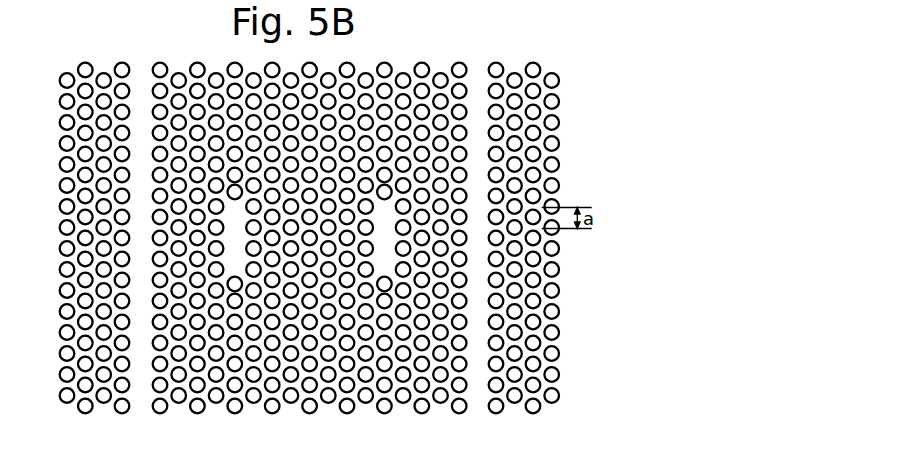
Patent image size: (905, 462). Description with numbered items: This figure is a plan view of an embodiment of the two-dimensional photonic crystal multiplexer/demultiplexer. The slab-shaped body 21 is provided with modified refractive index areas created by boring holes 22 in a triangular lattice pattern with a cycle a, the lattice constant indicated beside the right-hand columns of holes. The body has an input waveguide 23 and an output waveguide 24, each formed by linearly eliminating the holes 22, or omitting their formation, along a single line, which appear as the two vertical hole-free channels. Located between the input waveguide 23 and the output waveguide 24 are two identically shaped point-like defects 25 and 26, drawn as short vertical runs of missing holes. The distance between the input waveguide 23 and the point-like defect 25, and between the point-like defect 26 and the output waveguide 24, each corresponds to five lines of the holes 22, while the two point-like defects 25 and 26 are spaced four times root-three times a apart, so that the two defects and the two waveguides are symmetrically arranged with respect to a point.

The body 21 is at (542, 97).
The hole 22 is at (556, 137).
The input waveguide 23 is at (137, 103).
The output waveguide 24 is at (476, 103).
The point-like defect 25 is at (235, 226).
The point-like defect 26 is at (387, 228).